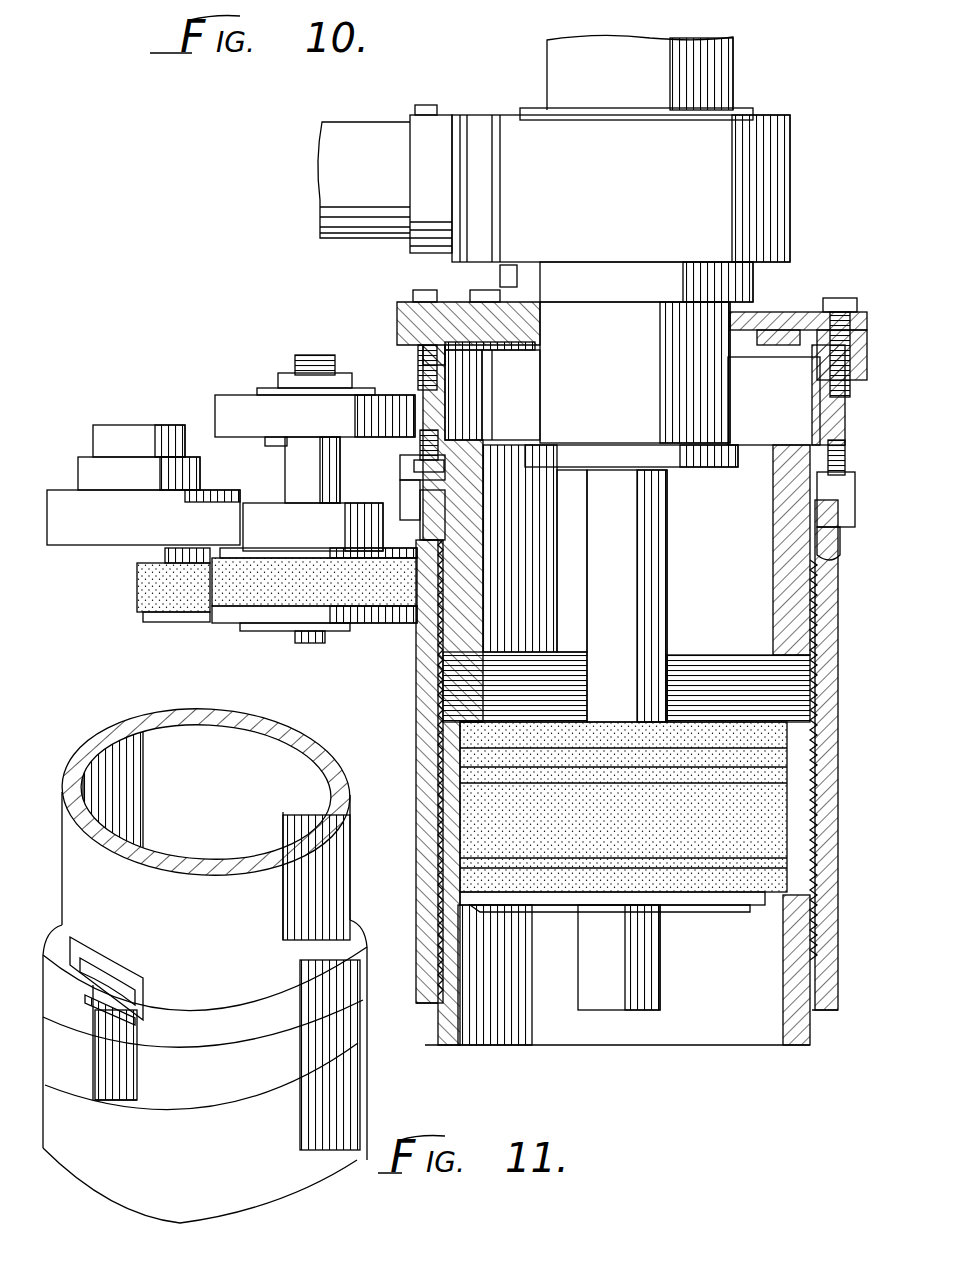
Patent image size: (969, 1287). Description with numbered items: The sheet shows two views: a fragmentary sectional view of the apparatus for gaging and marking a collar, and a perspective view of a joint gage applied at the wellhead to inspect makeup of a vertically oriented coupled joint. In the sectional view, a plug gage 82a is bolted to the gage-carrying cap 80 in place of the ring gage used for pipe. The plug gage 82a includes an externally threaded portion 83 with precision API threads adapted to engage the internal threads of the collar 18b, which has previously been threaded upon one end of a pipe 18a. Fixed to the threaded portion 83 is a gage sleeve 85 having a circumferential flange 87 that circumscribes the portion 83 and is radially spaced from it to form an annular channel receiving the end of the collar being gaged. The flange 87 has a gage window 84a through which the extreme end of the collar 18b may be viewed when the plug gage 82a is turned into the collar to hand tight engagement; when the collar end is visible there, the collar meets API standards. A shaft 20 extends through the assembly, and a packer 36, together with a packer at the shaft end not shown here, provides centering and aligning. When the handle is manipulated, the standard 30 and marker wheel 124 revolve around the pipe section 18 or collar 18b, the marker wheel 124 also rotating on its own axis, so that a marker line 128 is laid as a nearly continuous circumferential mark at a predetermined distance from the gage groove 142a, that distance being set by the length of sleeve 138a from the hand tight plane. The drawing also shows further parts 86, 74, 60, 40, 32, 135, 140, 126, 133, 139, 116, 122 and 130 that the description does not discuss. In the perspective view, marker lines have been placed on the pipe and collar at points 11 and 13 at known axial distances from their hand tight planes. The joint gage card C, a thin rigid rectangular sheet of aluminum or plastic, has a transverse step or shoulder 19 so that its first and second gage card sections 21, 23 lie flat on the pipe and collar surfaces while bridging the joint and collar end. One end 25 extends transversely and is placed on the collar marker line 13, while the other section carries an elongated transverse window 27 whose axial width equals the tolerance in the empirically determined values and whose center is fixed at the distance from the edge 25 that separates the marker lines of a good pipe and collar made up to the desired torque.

In FIG. 10, the standard 30 is at (368, 122).
In FIG. 10, the coupling 86 is at (446, 125).
In FIG. 10, the mounting plate 74 is at (750, 300).
In FIG. 10, the gage-carrying cap 80 is at (398, 308).
In FIG. 10, the gage groove 142a is at (848, 440).
In FIG. 10, the bearing housing 60 is at (730, 410).
In FIG. 10, the pipe section 18 is at (429, 771).
In FIG. 11, the pipe section 18 is at (300, 752).
In FIG. 10, the plug gage 82a is at (773, 518).
In FIG. 10, the collar 18b is at (838, 738).
In FIG. 11, the collar 18b is at (320, 1192).
In FIG. 10, the externally threaded portion 83 is at (815, 606).
In FIG. 10, the pipe 18a is at (812, 1045).
In FIG. 10, the shaft 20 is at (667, 583).
In FIG. 10, the piston 40 is at (790, 826).
In FIG. 10, the packer 36 is at (708, 920).
In FIG. 10, the gage window 84a is at (855, 510).
In FIG. 10, the circumferential flange 87 is at (845, 540).
In FIG. 10, the gage sleeve 85 is at (402, 456).
In FIG. 10, the clutch assembly 32 is at (232, 495).
In FIG. 10, the plate 135 is at (226, 396).
In FIG. 10, the nut 140 is at (284, 385).
In FIG. 10, the bolt 126 is at (312, 356).
In FIG. 10, the spacer 133 is at (268, 445).
In FIG. 10, the sleeve 138a is at (286, 477).
In FIG. 10, the plate 139 is at (246, 522).
In FIG. 10, the block 116 is at (112, 428).
In FIG. 10, the plate 122 is at (126, 546).
In FIG. 10, the ring 130 is at (137, 600).
In FIG. 10, the marker line 128 is at (256, 620).
In FIG. 10, the marker wheel 124 is at (280, 624).
In FIG. 11, the marker line on pipe 11 is at (245, 1012).
In FIG. 11, the transverse step or shoulder 19 is at (135, 1032).
In FIG. 11, the marker line on collar 13 is at (248, 1112).
In FIG. 11, the first gage card section 21 is at (145, 990).
In FIG. 11, the transverse window 27 is at (109, 984).
In FIG. 11, the second gage card section 23 is at (137, 1075).
In FIG. 11, the joint gage card C is at (98, 1094).
In FIG. 11, the end of gage card 25 is at (118, 1102).